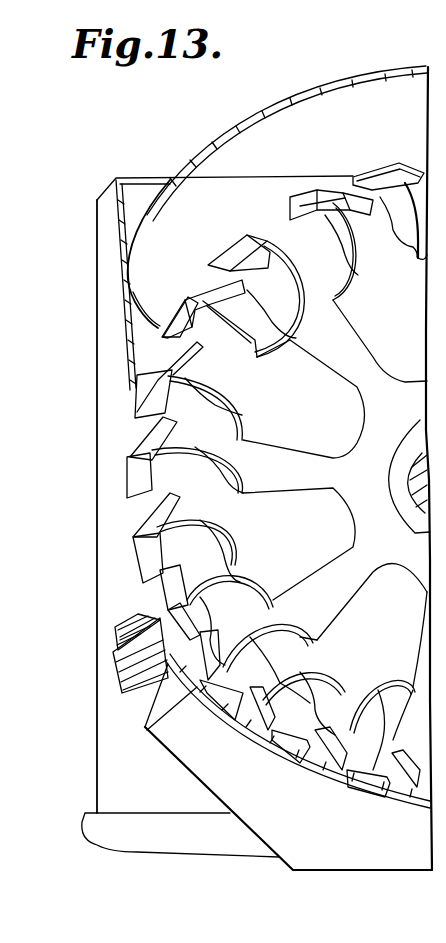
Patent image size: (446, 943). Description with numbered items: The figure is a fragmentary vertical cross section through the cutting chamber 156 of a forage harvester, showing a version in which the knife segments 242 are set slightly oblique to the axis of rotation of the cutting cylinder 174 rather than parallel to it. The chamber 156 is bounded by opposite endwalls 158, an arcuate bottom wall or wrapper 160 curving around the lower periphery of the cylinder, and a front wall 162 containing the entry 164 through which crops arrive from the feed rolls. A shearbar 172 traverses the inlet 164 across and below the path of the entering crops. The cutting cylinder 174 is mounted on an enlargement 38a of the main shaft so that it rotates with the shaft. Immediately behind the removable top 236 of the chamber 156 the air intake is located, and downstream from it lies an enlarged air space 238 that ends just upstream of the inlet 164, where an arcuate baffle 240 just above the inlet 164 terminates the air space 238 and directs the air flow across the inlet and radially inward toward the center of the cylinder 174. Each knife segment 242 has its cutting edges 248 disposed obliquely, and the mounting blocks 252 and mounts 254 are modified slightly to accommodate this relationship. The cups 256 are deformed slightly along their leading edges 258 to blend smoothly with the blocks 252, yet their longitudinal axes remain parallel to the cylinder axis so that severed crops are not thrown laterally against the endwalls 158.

The cutting chamber 156 is at (148, 160).
The front wall 162 is at (96, 250).
The entry 164 is at (115, 513).
The shearbar 172 is at (128, 623).
The endwalls 158 is at (128, 740).
The arcuate bottom wall or wrapper 160 is at (355, 797).
The removable top 236 is at (232, 136).
The enlarged air space 238 is at (356, 102).
The arcuate baffle 240 is at (137, 297).
The cutting cylinder 174 is at (210, 238).
The leading edges 258 is at (315, 230).
The cutting edges 248 is at (288, 200).
The knife segments 242 is at (311, 186).
The mounting blocks 252 is at (350, 200).
The cups 256 is at (368, 262).
The mounts 254 is at (373, 360).
The enlargement of shaft 38a is at (400, 515).